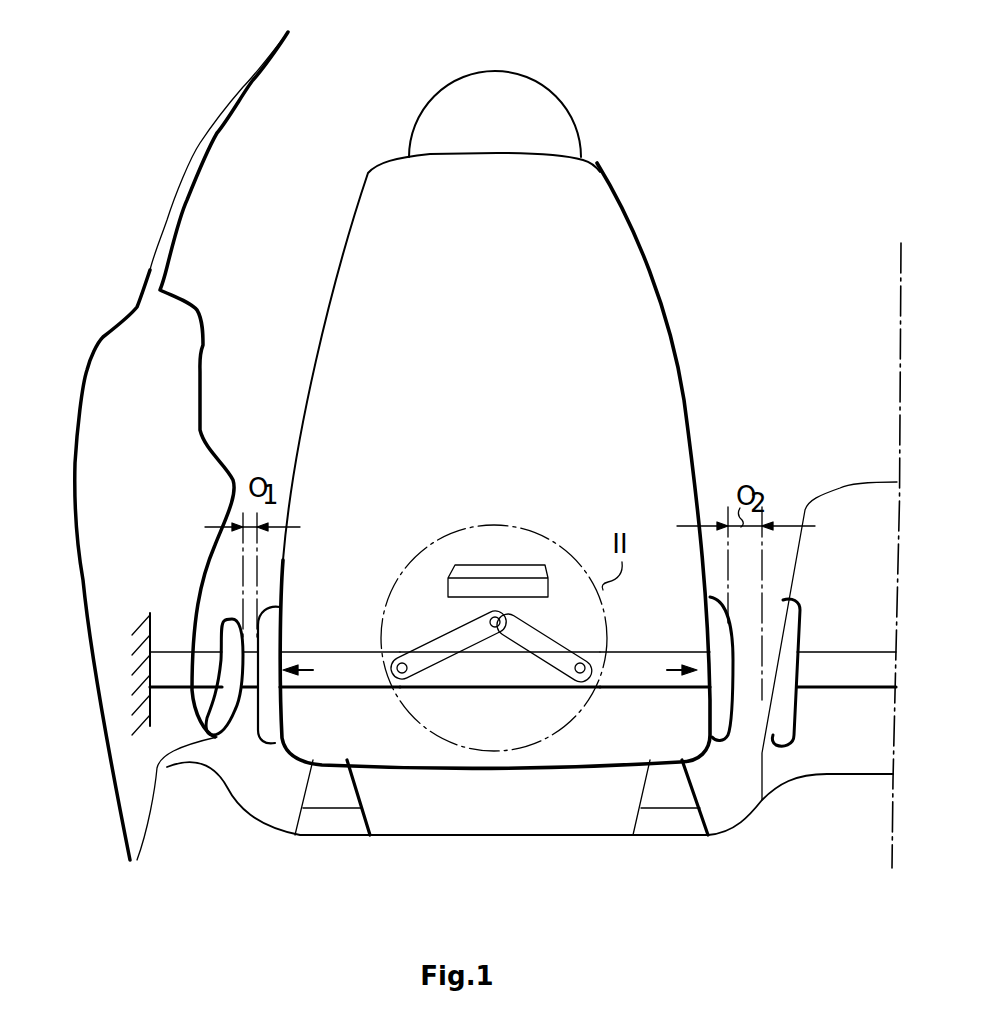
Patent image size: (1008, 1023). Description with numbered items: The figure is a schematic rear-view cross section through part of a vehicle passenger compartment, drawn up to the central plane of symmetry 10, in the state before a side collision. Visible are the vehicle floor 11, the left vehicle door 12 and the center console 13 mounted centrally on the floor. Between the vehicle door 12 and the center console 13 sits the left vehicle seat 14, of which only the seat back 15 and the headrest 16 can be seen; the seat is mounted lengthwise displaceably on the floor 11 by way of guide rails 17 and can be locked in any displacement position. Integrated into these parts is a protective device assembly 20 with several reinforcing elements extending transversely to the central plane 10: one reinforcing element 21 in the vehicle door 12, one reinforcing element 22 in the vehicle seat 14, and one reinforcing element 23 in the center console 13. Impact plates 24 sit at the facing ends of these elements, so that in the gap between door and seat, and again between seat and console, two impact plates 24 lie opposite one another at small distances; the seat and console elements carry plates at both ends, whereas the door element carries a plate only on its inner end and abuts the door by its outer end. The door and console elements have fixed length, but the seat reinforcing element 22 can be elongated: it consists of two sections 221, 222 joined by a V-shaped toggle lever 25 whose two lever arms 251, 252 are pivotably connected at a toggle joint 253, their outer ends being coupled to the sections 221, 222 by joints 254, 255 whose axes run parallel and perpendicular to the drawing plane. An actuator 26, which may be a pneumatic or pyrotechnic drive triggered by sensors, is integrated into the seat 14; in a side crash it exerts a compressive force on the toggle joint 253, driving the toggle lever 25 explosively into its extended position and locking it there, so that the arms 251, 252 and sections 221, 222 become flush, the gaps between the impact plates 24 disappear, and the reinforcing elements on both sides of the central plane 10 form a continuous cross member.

The central plane of symmetry 10 is at (900, 278).
The vehicle floor 11 is at (475, 836).
The vehicle door 12 is at (98, 512).
The center console 13 is at (850, 486).
The vehicle seat 14 is at (495, 439).
The seat back 15 is at (338, 262).
The headrest 16 is at (502, 86).
The guide rails 17 is at (323, 822).
The protective device assembly 20 is at (498, 525).
The reinforcing element 21 is at (178, 668).
The reinforcing element 22 is at (523, 652).
The reinforcing element 23 is at (830, 662).
The impact plates 24 is at (224, 725).
The toggle lever 25 is at (516, 633).
The actuator 26 is at (520, 565).
The lever arm 251 is at (432, 640).
The lever arm 252 is at (552, 660).
The toggle joint 253 is at (498, 630).
The joint 254 is at (405, 675).
The joint 255 is at (590, 650).
The section of reinforcing element 221 is at (343, 677).
The section of reinforcing element 222 is at (635, 665).